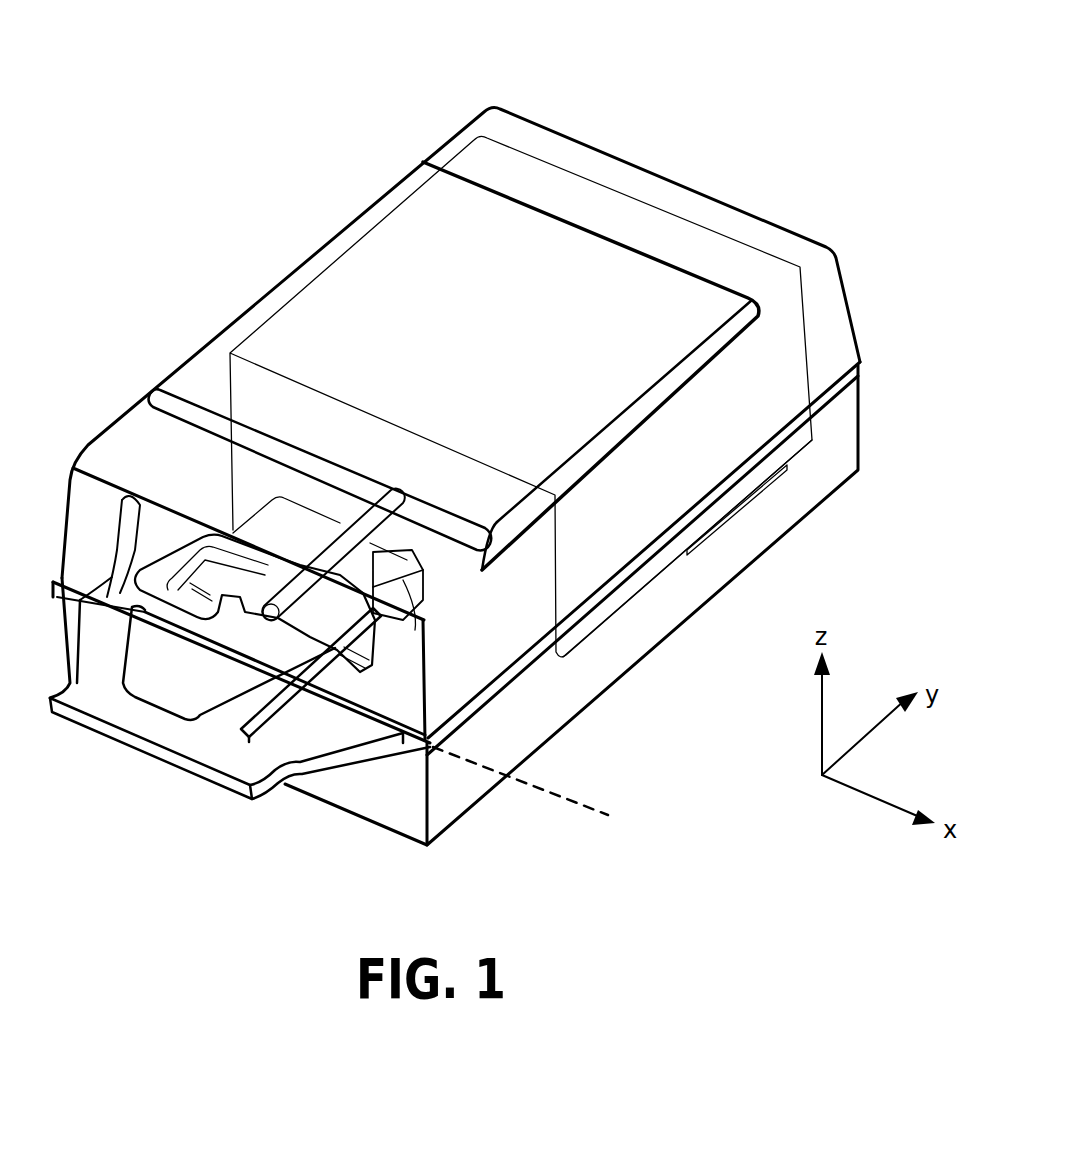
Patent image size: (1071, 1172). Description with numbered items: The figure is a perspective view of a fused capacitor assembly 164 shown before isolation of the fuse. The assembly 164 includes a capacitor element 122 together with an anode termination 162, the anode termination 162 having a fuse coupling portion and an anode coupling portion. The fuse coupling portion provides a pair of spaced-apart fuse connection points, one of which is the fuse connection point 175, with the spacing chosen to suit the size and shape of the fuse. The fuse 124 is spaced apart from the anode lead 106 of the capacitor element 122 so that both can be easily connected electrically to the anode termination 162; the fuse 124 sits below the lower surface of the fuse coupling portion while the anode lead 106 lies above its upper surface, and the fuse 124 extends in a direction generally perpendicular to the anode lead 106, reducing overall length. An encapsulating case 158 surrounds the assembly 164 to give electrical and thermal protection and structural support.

The fused capacitor assembly 164 is at (722, 108).
The encapsulating case 158 is at (243, 313).
The capacitor element 122 is at (792, 268).
The anode termination 162 is at (151, 765).
The anode lead 106 is at (375, 522).
The fuse 124 is at (373, 565).
The fuse connection point 175 is at (547, 794).